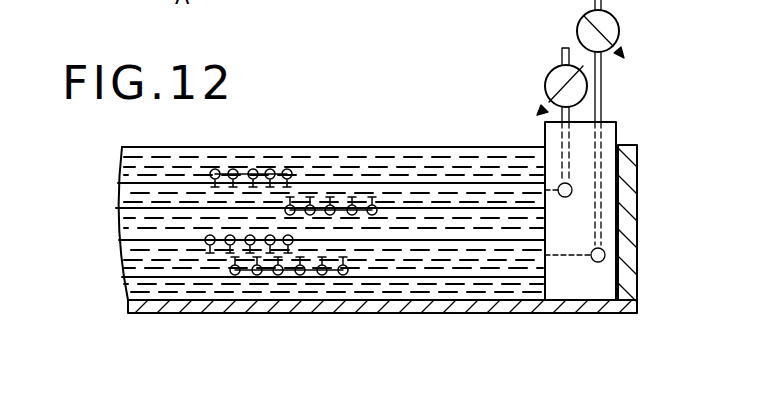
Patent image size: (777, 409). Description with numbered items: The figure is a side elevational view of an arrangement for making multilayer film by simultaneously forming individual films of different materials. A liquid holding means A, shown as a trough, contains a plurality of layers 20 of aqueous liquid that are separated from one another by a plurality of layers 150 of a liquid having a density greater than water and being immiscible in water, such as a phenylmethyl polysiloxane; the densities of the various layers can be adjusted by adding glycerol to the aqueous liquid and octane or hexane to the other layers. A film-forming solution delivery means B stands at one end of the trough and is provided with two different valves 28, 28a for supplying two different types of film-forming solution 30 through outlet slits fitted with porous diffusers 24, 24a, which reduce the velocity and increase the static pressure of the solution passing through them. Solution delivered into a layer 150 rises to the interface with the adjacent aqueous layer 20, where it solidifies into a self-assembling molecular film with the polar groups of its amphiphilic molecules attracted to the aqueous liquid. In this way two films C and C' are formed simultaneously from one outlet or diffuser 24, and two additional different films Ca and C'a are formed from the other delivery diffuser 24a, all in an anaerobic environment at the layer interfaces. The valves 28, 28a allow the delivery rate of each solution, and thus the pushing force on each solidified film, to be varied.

The layer of liquid having a density greater than water 150 is at (140, 157).
The aqueous liquid layer 20 is at (322, 168).
The self-assembling molecular film C is at (251, 138).
The film Ca is at (198, 230).
The film C' is at (346, 152).
The film C'a is at (317, 301).
The liquid holding means A is at (190, 319).
The delivery means B is at (630, 118).
The porous member 24 is at (545, 188).
The diffuser 24a is at (538, 258).
The adjustable valve 28 is at (545, 82).
The valve 28a is at (619, 27).
The film-forming solution 30 is at (470, 5).